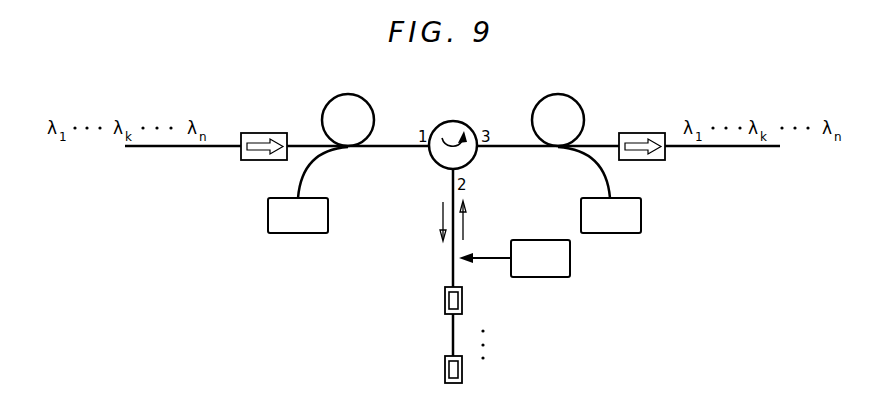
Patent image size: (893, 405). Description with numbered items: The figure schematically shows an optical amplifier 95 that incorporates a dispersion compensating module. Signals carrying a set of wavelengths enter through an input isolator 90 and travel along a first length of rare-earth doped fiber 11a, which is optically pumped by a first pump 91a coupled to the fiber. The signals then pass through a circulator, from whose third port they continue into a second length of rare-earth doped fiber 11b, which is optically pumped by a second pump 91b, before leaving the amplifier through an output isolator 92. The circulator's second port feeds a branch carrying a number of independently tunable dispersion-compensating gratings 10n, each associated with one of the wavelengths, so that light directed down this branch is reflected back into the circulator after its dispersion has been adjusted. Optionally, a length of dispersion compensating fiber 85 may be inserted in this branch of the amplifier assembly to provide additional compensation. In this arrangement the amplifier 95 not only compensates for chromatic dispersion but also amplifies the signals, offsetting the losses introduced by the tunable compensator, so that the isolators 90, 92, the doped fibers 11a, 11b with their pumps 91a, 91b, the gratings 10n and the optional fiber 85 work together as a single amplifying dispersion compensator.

The amplifier 95 is at (259, 297).
The input isolator 90 is at (265, 133).
The output isolator 92 is at (642, 133).
The first length of rare-earth doped fiber 11a is at (335, 108).
The second length of rare-earth doped fiber 11b is at (570, 108).
The first pump 91a is at (268, 223).
The second pump 91b is at (641, 218).
The dispersion compensating fiber 85 is at (540, 240).
The independently tunable dispersion-compensating gratings 10n is at (426, 337).